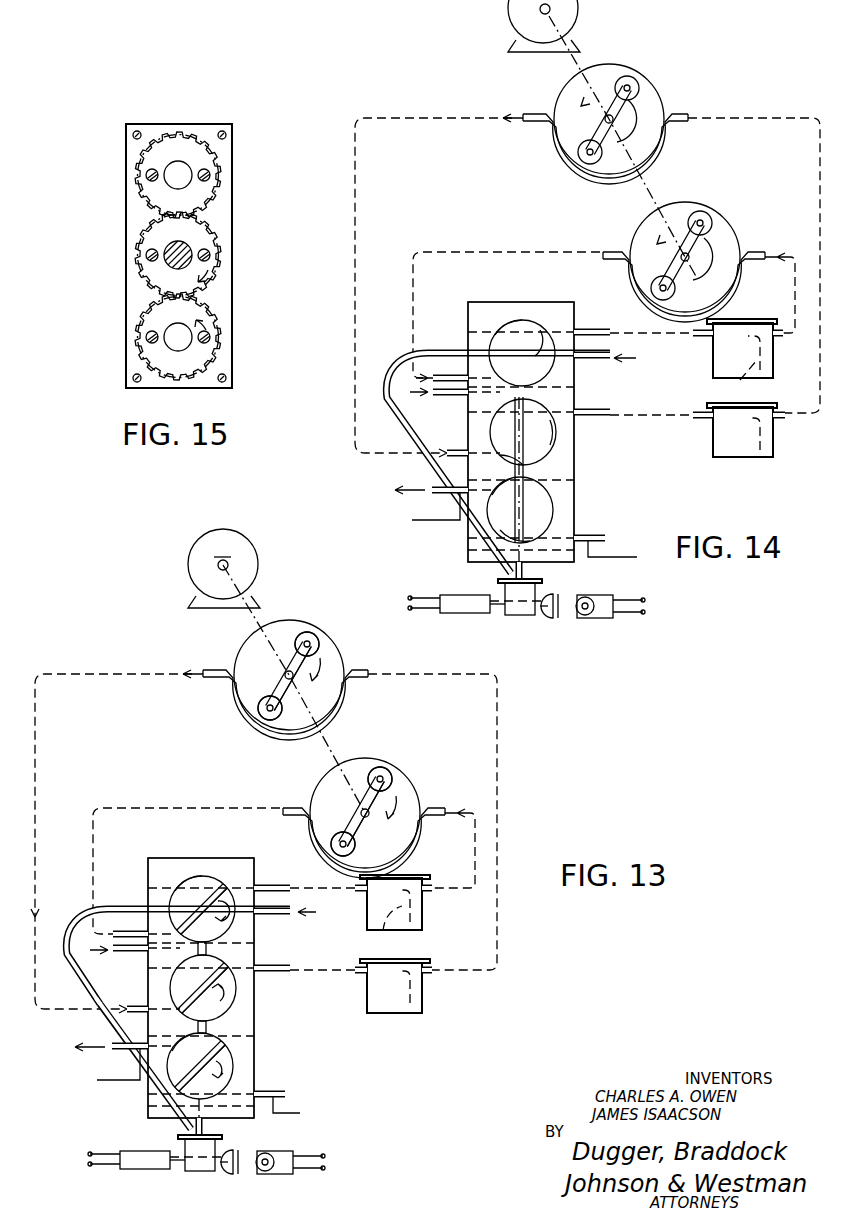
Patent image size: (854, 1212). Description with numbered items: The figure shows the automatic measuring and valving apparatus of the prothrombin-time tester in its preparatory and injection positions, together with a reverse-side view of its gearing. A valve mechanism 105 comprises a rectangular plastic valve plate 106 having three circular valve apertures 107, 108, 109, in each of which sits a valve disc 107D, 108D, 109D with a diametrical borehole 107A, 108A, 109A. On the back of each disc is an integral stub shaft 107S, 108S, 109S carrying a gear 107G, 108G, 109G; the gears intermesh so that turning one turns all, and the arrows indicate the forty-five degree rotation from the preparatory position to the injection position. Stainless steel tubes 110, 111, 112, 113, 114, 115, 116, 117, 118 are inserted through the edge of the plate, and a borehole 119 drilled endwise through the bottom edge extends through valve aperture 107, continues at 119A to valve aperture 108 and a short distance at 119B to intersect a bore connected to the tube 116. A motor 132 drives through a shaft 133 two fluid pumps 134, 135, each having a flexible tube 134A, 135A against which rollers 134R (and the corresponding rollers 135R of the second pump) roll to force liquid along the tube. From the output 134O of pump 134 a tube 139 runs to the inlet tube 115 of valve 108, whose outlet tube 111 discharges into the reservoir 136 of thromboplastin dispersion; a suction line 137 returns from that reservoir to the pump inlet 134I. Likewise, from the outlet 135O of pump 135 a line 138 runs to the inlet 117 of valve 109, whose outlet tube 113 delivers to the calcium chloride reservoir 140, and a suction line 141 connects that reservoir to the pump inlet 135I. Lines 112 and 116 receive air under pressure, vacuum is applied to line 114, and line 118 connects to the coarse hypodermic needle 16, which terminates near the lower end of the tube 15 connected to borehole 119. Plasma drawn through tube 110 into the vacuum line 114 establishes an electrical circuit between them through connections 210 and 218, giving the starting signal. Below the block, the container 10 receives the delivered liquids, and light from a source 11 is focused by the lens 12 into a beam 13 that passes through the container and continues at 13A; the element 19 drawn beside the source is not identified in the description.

In FIG. 14, the container 10 is at (515, 618).
In FIG. 13, the container 10 is at (197, 1168).
In FIG. 14, the light source 11 is at (590, 620).
In FIG. 13, the light source 11 is at (290, 1176).
In FIG. 14, the lens 12 is at (545, 623).
In FIG. 13, the lens 12 is at (238, 1182).
In FIG. 14, the light beam 13 is at (550, 620).
In FIG. 13, the light beam 13 is at (222, 1176).
In FIG. 14, the continued light beam 13A is at (493, 614).
In FIG. 13, the continued light beam 13A is at (160, 1181).
In FIG. 14, the tube 15 is at (528, 570).
In FIG. 13, the tube 15 is at (225, 1130).
In FIG. 13, the tube 16 is at (143, 1063).
In FIG. 14, the light source 19 is at (467, 595).
In FIG. 13, the light source 19 is at (129, 1150).
In FIG. 14, the valve mechanism 105 is at (486, 293).
In FIG. 13, the valve mechanism 105 is at (201, 972).
In FIG. 14, the valve plate 106 is at (535, 302).
In FIG. 13, the valve plate 106 is at (222, 974).
In FIG. 14, the valve aperture 107 is at (552, 503).
In FIG. 13, the valve aperture 107 is at (229, 1030).
In FIG. 14, the diametrical aperture 107A is at (520, 528).
In FIG. 13, the diametrical aperture 107A is at (197, 1071).
In FIG. 14, the valve disc 107D is at (510, 486).
In FIG. 13, the valve disc 107D is at (202, 1050).
In FIG. 15, the gear 107G is at (142, 341).
In FIG. 15, the stub shaft 107S is at (190, 343).
In FIG. 14, the valve aperture 108 is at (560, 436).
In FIG. 13, the valve aperture 108 is at (233, 988).
In FIG. 14, the diametrical aperture 108A is at (530, 458).
In FIG. 13, the diametrical aperture 108A is at (244, 995).
In FIG. 14, the valve disc 108D is at (565, 442).
In FIG. 15, the gear 108G is at (142, 268).
In FIG. 15, the stub shaft 108S is at (195, 257).
In FIG. 14, the valve aperture 109 is at (612, 350).
In FIG. 13, the valve aperture 109 is at (231, 909).
In FIG. 14, the diametrical aperture 109A is at (540, 330).
In FIG. 13, the diametrical aperture 109A is at (203, 915).
In FIG. 14, the valve disc 109D is at (513, 333).
In FIG. 13, the valve disc 109D is at (179, 875).
In FIG. 15, the gear 109G is at (142, 196).
In FIG. 15, the stub shaft 109S is at (190, 183).
In FIG. 14, the tube 110 is at (598, 538).
In FIG. 13, the tube 110 is at (223, 1081).
In FIG. 14, the outlet tube 111 is at (586, 414).
In FIG. 13, the outlet tube 111 is at (251, 955).
In FIG. 14, the tube 112 is at (588, 358).
In FIG. 13, the tube 112 is at (299, 920).
In FIG. 14, the outlet tube 113 is at (592, 332).
In FIG. 13, the outlet tube 113 is at (251, 873).
In FIG. 14, the tube 114 is at (432, 494).
In FIG. 13, the tube 114 is at (106, 1056).
In FIG. 14, the inlet tube 115 is at (454, 452).
In FIG. 13, the inlet tube 115 is at (142, 997).
In FIG. 14, the tube 116 is at (449, 396).
In FIG. 13, the tube 116 is at (131, 966).
In FIG. 14, the inlet tube 117 is at (450, 378).
In FIG. 13, the inlet tube 117 is at (137, 909).
In FIG. 14, the tube 118 is at (448, 340).
In FIG. 13, the tube 118 is at (178, 934).
In FIG. 14, the borehole 119 is at (526, 552).
In FIG. 13, the borehole 119 is at (201, 1108).
In FIG. 14, the borehole extension 119A is at (575, 482).
In FIG. 13, the borehole extension 119A is at (224, 1032).
In FIG. 14, the bore 119B is at (575, 388).
In FIG. 13, the bore 119B is at (205, 947).
In FIG. 14, the motor 132 is at (508, 22).
In FIG. 13, the motor 132 is at (202, 568).
In FIG. 14, the shaft 133 is at (560, 32).
In FIG. 13, the shaft 133 is at (301, 689).
In FIG. 14, the fluid pump 134 is at (650, 104).
In FIG. 13, the fluid pump 134 is at (303, 675).
In FIG. 13, the flexible tube 134A is at (262, 698).
In FIG. 14, the pump inlet 134I is at (678, 122).
In FIG. 13, the pump inlet 134I is at (348, 694).
In FIG. 14, the pump output 134O is at (535, 116).
In FIG. 13, the pump output 134O is at (231, 705).
In FIG. 13, the rollers 134R is at (301, 677).
In FIG. 14, the fluid pump 135 is at (725, 237).
In FIG. 13, the fluid pump 135 is at (378, 813).
In FIG. 13, the flexible tube 135A is at (405, 823).
In FIG. 14, the pump inlet 135I is at (758, 253).
In FIG. 13, the pump inlet 135I is at (412, 843).
In FIG. 14, the pump outlet 135O is at (610, 252).
In FIG. 13, the pump outlet 135O is at (310, 828).
In FIG. 13, the roller 135R is at (384, 797).
In FIG. 14, the reservoir 136 is at (745, 457).
In FIG. 13, the reservoir 136 is at (393, 1000).
In FIG. 14, the suction line 137 is at (818, 190).
In FIG. 13, the suction line 137 is at (432, 835).
In FIG. 13, the line 138 is at (186, 860).
In FIG. 14, the tube 139 is at (356, 190).
In FIG. 13, the tube 139 is at (117, 841).
In FIG. 14, the reservoir 140 is at (770, 350).
In FIG. 13, the reservoir 140 is at (408, 902).
In FIG. 14, the suction line 141 is at (793, 290).
In FIG. 13, the suction line 141 is at (424, 879).
In FIG. 14, the electrical connection 210 is at (440, 522).
In FIG. 13, the electrical connection 210 is at (111, 1081).
In FIG. 14, the electrical connection 218 is at (596, 559).
In FIG. 13, the electrical connection 218 is at (302, 1107).